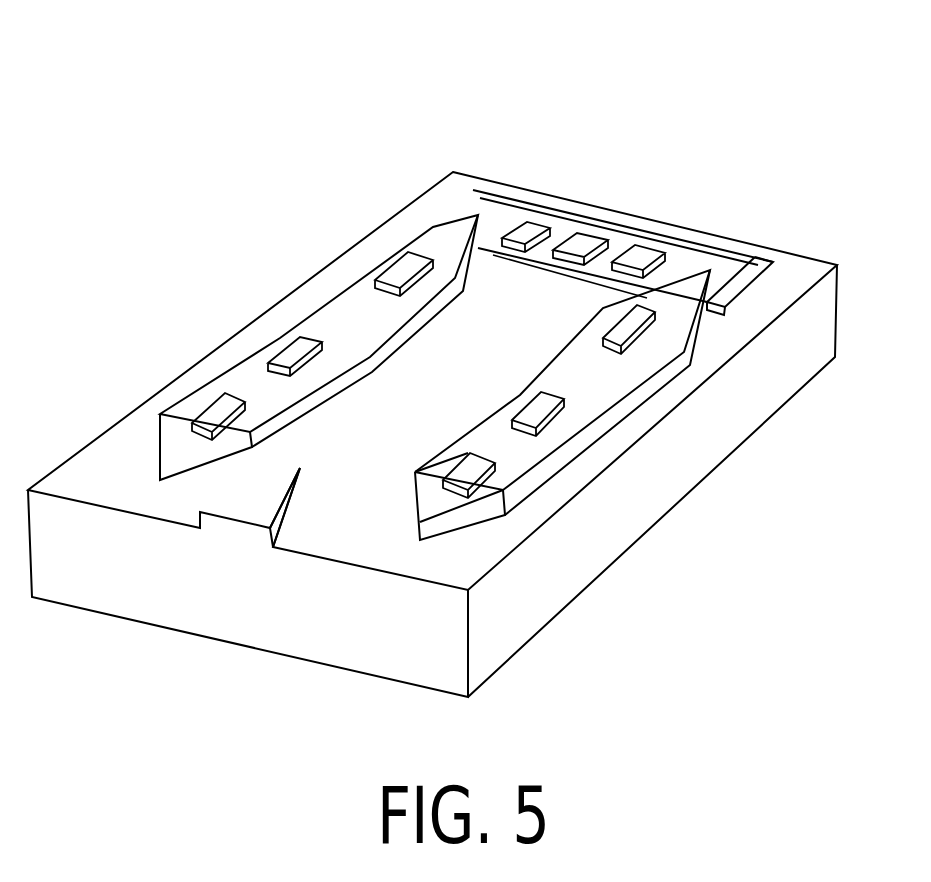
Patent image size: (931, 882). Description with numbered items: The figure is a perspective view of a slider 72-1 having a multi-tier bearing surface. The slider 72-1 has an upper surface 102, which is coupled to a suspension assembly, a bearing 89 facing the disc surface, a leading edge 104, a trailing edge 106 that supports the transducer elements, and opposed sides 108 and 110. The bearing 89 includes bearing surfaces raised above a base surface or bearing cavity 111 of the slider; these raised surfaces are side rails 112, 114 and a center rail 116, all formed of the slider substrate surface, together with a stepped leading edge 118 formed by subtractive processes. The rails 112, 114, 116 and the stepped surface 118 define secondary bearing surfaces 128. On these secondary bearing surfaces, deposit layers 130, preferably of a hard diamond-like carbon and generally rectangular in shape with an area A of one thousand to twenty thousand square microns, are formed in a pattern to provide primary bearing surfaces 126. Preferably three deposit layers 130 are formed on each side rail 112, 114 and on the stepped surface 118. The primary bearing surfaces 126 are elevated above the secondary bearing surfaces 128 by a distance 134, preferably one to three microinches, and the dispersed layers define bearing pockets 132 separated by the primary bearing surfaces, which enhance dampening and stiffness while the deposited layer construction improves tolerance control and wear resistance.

The slider 72-1 is at (557, 100).
The bearing 89 is at (647, 205).
The upper surface 102 is at (673, 510).
The leading edge 104 is at (717, 237).
The trailing edge 106 is at (268, 603).
The side 108 is at (271, 305).
The side 110 is at (707, 463).
The base surface or bearing cavity 111 is at (380, 537).
The side rail 112 is at (333, 293).
The side rail 114 is at (553, 367).
The center rail 116 is at (273, 492).
The stepped leading edge 118 is at (567, 226).
The primary bearing surface 126 is at (512, 225).
The secondary bearing surface 128 is at (690, 257).
The deposit layer 130 is at (520, 215).
The bearing pocket 132 is at (575, 395).
The distance 134 is at (490, 255).
The area A is at (530, 223).